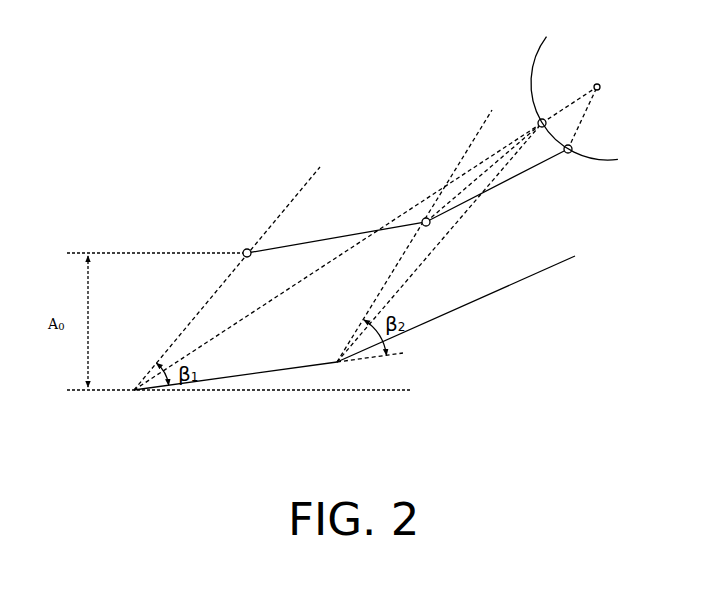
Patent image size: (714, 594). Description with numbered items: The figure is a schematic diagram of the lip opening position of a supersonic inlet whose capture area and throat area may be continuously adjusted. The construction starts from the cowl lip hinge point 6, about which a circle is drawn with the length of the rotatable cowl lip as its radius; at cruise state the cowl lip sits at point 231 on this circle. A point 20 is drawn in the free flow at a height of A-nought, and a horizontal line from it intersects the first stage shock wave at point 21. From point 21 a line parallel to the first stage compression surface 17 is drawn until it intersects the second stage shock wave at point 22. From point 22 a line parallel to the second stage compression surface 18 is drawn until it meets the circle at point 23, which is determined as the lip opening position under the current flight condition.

The cowl lip hinge point 6 is at (574, 98).
The first stage compression surface 17 is at (235, 374).
The second stage compression surface 18 is at (456, 309).
The point in the free flow 20 is at (157, 241).
The intersection point with the first shock wave 21 is at (236, 243).
The intersection point with the second shock wave 22 is at (413, 211).
The lip opening position 23 is at (570, 163).
The cowl lip cruise position 231 is at (520, 119).